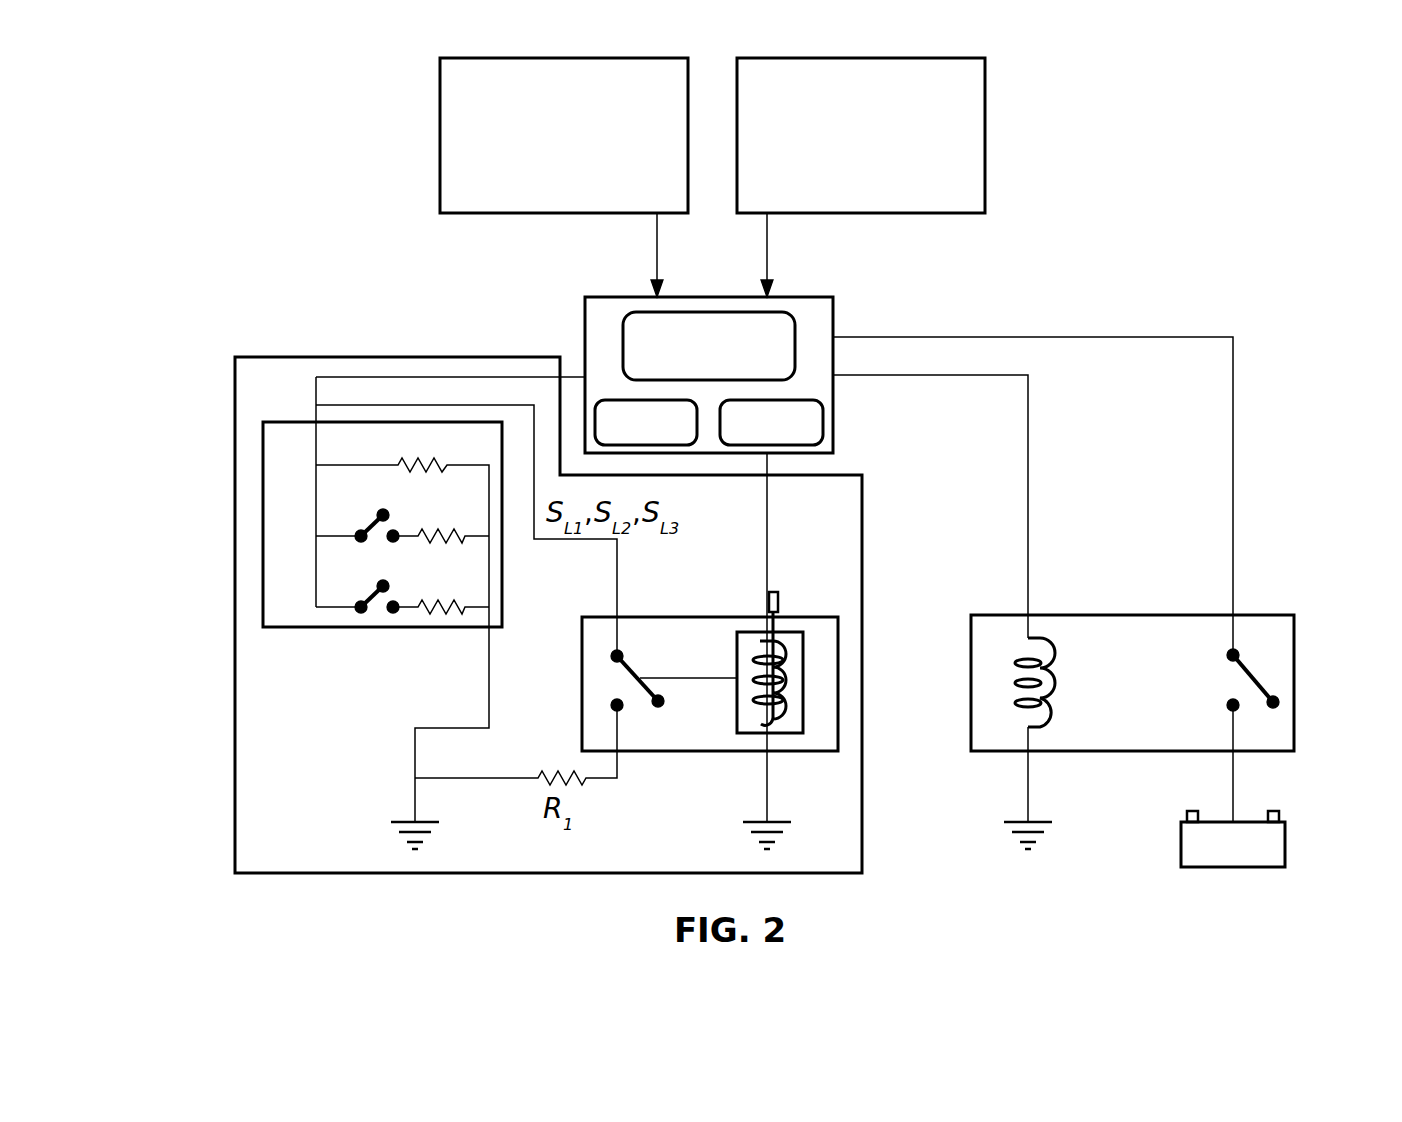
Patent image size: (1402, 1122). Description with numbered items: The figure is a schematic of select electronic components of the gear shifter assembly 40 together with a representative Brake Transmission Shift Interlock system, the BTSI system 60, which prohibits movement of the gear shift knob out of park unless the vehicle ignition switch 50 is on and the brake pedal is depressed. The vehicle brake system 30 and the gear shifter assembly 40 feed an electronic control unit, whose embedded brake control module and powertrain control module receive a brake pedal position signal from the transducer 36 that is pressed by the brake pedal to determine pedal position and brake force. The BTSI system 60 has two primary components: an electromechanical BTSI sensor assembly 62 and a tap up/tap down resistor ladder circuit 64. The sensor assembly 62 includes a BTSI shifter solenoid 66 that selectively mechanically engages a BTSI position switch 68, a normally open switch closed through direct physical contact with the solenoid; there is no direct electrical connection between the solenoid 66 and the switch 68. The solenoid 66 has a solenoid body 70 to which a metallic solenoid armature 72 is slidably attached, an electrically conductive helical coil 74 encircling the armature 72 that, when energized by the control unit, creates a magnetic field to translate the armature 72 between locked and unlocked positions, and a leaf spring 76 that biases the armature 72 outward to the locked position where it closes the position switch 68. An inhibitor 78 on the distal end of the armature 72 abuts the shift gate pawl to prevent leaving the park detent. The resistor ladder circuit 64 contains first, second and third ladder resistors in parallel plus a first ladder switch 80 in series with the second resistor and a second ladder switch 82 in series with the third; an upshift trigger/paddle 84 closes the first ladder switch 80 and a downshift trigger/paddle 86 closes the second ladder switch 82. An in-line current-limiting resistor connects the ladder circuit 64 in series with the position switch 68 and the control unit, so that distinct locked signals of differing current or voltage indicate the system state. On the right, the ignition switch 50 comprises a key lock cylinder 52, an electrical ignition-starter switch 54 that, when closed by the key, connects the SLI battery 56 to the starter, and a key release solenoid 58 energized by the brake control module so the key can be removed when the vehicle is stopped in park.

The vehicle brake system 30 is at (985, 72).
The gear shifter assembly 40 is at (440, 72).
The transducer 36 is at (583, 296).
The BTSI system 60 is at (234, 380).
The resistor ladder circuit 64 is at (325, 599).
The upshift trigger/paddle 84 is at (272, 538).
The downshift trigger/paddle 86 is at (272, 596).
The first ladder switch 80 is at (368, 524).
The second ladder switch 82 is at (368, 596).
The BTSI sensor assembly 62 is at (724, 699).
The BTSI position switch 68 is at (628, 664).
The solenoid armature 72 is at (821, 647).
The solenoid body 70 is at (800, 653).
The helical coil 74 is at (800, 678).
The leaf spring 76 is at (800, 712).
The inhibitor 78 is at (780, 598).
The BTSI shifter solenoid 66 is at (734, 725).
The vehicle ignition switch 50 is at (1179, 632).
The key lock cylinder 52 is at (1294, 725).
The electrical ignition-starter switch 54 is at (1258, 680).
The key release solenoid 58 is at (1057, 650).
The SLI battery 56 is at (1285, 848).